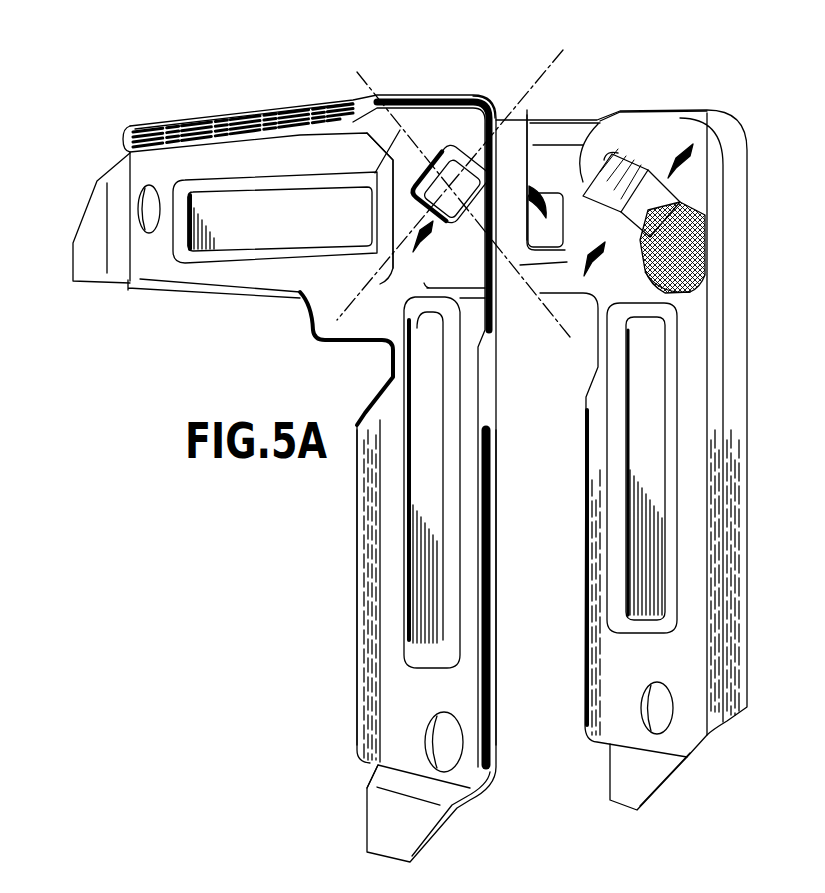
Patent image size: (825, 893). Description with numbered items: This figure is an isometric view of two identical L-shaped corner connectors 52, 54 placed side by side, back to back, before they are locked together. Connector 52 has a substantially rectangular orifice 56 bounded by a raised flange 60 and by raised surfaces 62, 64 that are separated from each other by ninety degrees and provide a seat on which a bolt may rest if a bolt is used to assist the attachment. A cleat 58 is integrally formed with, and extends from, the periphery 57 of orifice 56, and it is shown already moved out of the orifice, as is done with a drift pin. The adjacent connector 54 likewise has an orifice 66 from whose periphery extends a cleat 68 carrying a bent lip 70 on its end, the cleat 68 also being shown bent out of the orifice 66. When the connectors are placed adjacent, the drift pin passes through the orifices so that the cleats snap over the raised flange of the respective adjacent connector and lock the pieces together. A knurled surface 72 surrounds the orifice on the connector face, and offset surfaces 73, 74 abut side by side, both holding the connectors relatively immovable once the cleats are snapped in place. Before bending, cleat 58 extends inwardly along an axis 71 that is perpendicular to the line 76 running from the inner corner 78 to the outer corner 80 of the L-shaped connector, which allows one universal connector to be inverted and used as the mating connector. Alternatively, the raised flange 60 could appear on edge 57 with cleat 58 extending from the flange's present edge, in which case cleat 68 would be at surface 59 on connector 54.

The L-shaped connector 52 is at (233, 108).
The L-shaped connector 54 is at (617, 114).
The orifice 56 is at (463, 202).
The periphery 57 is at (478, 204).
The cleat 58 is at (555, 193).
The surface 59 is at (683, 201).
The raised flange 60 is at (410, 140).
The raised surface 62 is at (415, 201).
The raised surface 64 is at (467, 137).
The orifice 66 is at (700, 238).
The cleat 68 is at (636, 168).
The bent lip 70 is at (611, 152).
The axis 71 is at (372, 92).
The knurled surface 72 is at (697, 250).
The offset surface 73 is at (681, 147).
The offset surface 74 is at (415, 262).
The line 76 is at (553, 64).
The inner corner 78 is at (310, 312).
The outer corner 80 is at (500, 98).